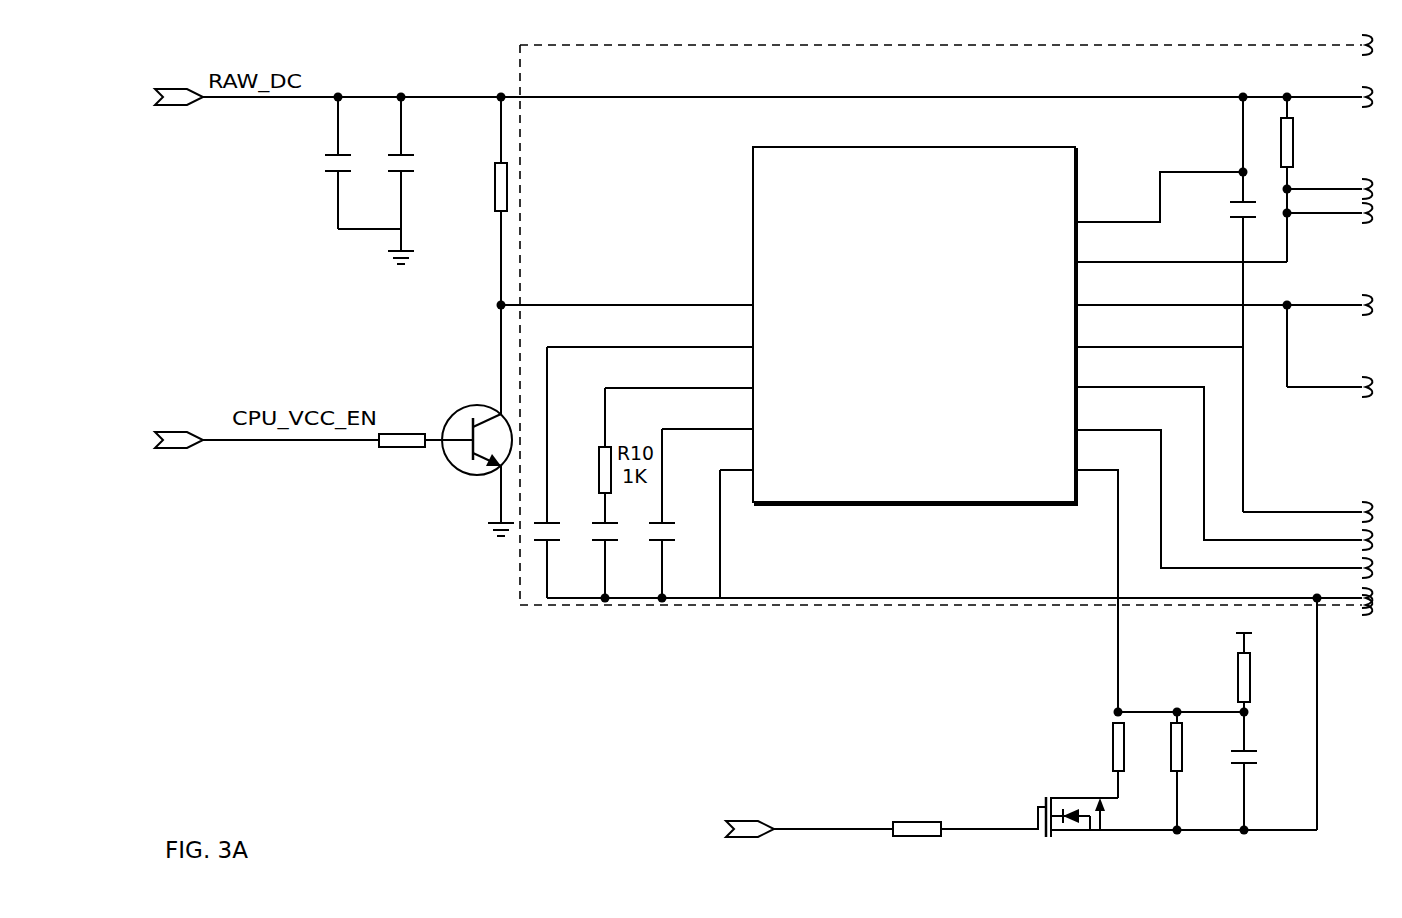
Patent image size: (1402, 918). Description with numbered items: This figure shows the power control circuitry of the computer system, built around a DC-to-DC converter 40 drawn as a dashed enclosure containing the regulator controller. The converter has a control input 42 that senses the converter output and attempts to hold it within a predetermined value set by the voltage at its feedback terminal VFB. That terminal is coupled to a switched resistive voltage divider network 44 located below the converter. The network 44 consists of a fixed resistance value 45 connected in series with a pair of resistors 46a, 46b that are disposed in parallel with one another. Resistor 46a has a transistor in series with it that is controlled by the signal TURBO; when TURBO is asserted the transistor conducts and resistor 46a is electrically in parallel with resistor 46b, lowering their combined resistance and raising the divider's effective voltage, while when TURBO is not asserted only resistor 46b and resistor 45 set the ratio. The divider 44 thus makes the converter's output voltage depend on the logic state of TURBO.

The DC-to-DC converter 40 is at (722, 606).
The control input 42 is at (752, 175).
The switched resistive voltage divider network 44 is at (880, 692).
The fixed resistance value 45 is at (1251, 680).
The resistor 46a is at (1113, 735).
The resistor 46b is at (1177, 712).